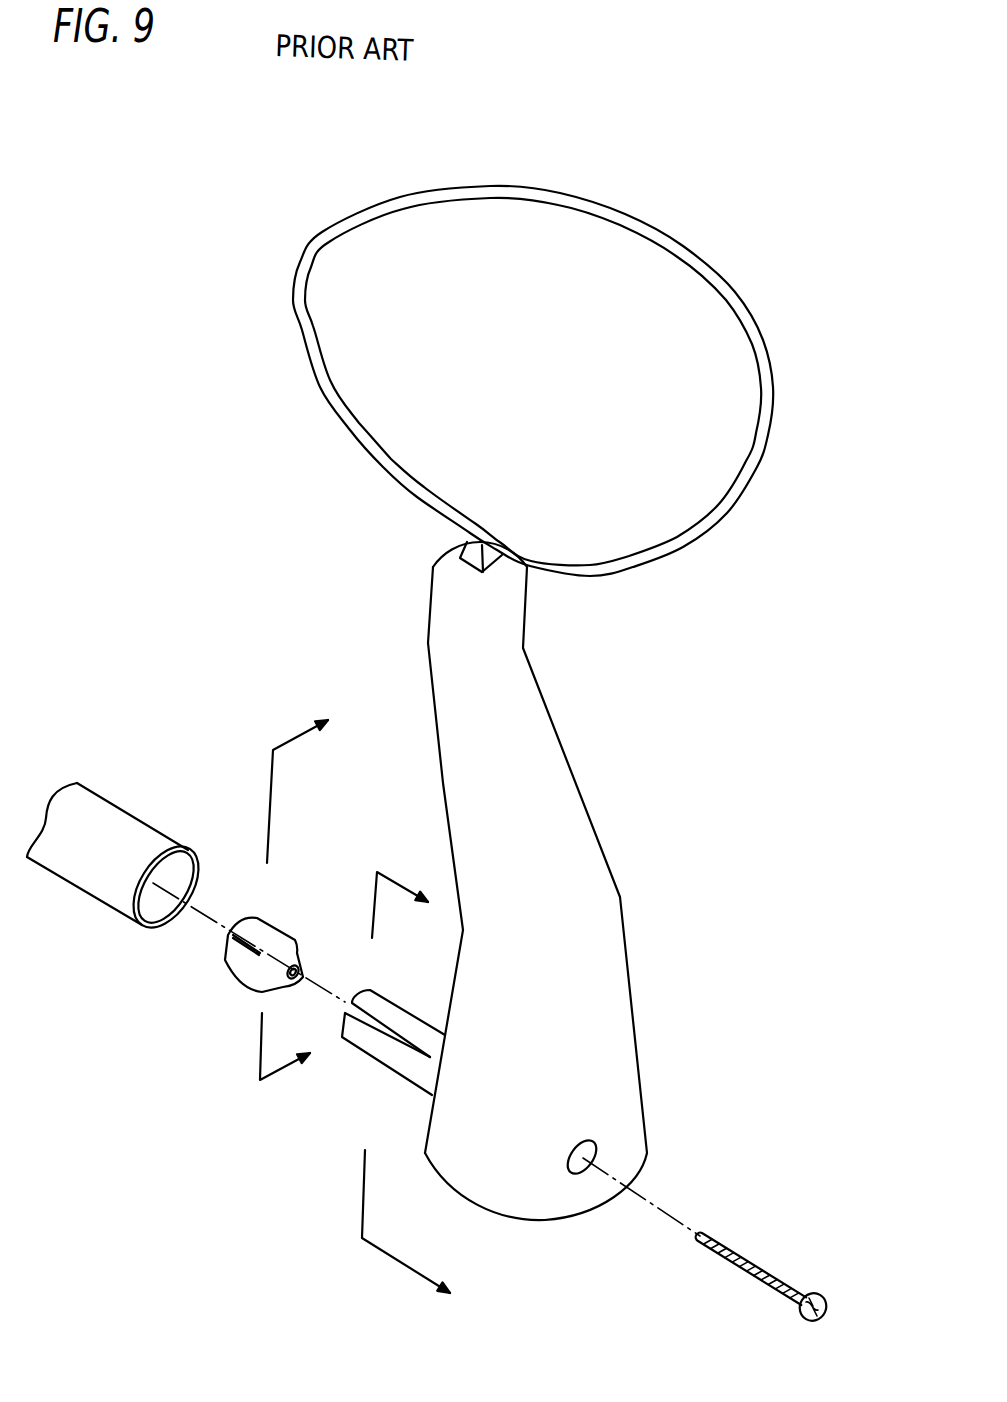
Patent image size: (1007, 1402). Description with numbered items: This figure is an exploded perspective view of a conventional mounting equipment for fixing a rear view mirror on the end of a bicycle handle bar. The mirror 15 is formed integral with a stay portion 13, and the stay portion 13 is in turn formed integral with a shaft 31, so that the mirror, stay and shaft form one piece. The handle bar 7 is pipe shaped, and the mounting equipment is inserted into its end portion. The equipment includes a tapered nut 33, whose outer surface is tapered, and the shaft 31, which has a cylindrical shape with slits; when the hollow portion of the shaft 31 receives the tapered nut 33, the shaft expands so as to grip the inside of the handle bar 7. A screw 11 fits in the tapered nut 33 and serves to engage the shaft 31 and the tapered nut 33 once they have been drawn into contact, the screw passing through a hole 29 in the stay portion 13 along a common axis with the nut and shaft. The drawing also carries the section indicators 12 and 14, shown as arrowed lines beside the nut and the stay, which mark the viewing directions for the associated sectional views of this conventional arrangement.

The handle bar 7 is at (93, 903).
The screw 11 is at (748, 1255).
The section view arrows 12 is at (291, 920).
The stay portion 13 is at (552, 828).
The section view arrows 14 is at (406, 1072).
The mirror 15 is at (677, 278).
The screw hole 29 is at (580, 1152).
The shaft 31 is at (362, 1060).
The tapered nut 33 is at (245, 987).